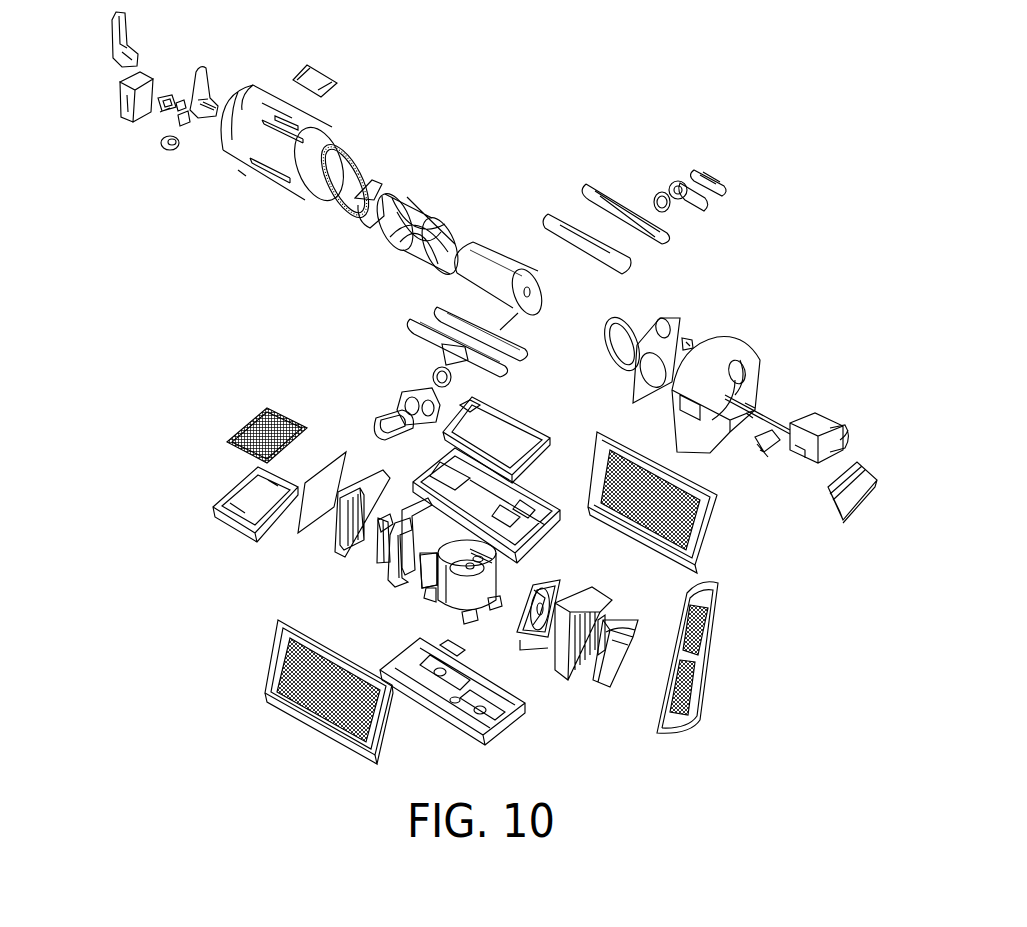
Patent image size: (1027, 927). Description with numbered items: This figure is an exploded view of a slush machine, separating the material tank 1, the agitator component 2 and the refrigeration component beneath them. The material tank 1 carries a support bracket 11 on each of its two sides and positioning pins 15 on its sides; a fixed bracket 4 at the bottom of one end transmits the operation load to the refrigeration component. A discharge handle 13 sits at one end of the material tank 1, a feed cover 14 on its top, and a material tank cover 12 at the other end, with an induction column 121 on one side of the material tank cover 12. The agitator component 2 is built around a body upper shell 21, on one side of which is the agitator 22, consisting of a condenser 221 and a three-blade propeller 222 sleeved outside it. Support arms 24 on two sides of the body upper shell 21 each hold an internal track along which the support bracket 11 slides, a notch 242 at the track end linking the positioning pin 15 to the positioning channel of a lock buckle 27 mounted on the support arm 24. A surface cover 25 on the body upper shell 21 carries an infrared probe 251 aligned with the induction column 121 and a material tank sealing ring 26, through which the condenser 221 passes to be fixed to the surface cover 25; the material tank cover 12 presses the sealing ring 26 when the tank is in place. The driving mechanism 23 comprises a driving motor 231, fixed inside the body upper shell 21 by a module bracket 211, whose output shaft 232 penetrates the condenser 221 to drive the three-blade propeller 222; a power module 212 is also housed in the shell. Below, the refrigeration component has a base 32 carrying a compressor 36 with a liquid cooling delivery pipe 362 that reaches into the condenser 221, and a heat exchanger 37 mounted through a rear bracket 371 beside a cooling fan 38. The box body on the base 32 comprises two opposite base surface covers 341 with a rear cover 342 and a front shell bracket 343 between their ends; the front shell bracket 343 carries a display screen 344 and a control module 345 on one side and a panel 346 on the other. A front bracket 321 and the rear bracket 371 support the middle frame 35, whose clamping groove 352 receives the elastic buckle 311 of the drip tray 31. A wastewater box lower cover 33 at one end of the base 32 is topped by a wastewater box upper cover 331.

The material tank 1 is at (263, 165).
The support bracket 11 is at (280, 180).
The positioning pin 15 is at (298, 187).
The fixed bracket 4 is at (240, 180).
The discharge handle 13 is at (107, 43).
The feed cover 14 is at (323, 75).
The material tank cover 12 is at (369, 169).
The induction column 121 is at (352, 150).
The three-blade propeller 222 is at (420, 200).
The agitator 22 is at (448, 239).
The condenser 221 is at (483, 273).
The support arm 24 is at (415, 328).
The notch 242 is at (453, 352).
The lock buckle 27 is at (677, 217).
The material tank sealing ring 26 is at (632, 320).
The surface cover 25 is at (682, 315).
The infrared probe 251 is at (693, 337).
The body upper shell 21 is at (717, 358).
The agitator component 2 is at (739, 383).
The module bracket 211 is at (788, 417).
The driving mechanism 23 is at (839, 419).
The driving motor 231 is at (813, 432).
The output shaft 232 is at (763, 432).
The power module 212 is at (860, 462).
The middle frame 35 is at (492, 507).
The wastewater box upper cover 331 is at (267, 408).
The panel 346 is at (325, 473).
The wastewater box lower cover 33 is at (242, 490).
The control module 345 is at (383, 525).
The front shell bracket 343 is at (335, 540).
The display screen 344 is at (373, 552).
The front bracket 321 is at (397, 560).
The clamping groove 352 is at (437, 467).
The drip tray 31 is at (509, 428).
The elastic buckle 311 is at (472, 405).
The compressor 36 is at (432, 586).
The liquid cooling delivery pipe 362 is at (468, 570).
The base surface cover 341 is at (278, 638).
The base 32 is at (473, 715).
The cooling fan 38 is at (533, 637).
The rear bracket 371 is at (593, 622).
The heat exchanger 37 is at (610, 670).
The rear cover 342 is at (710, 642).